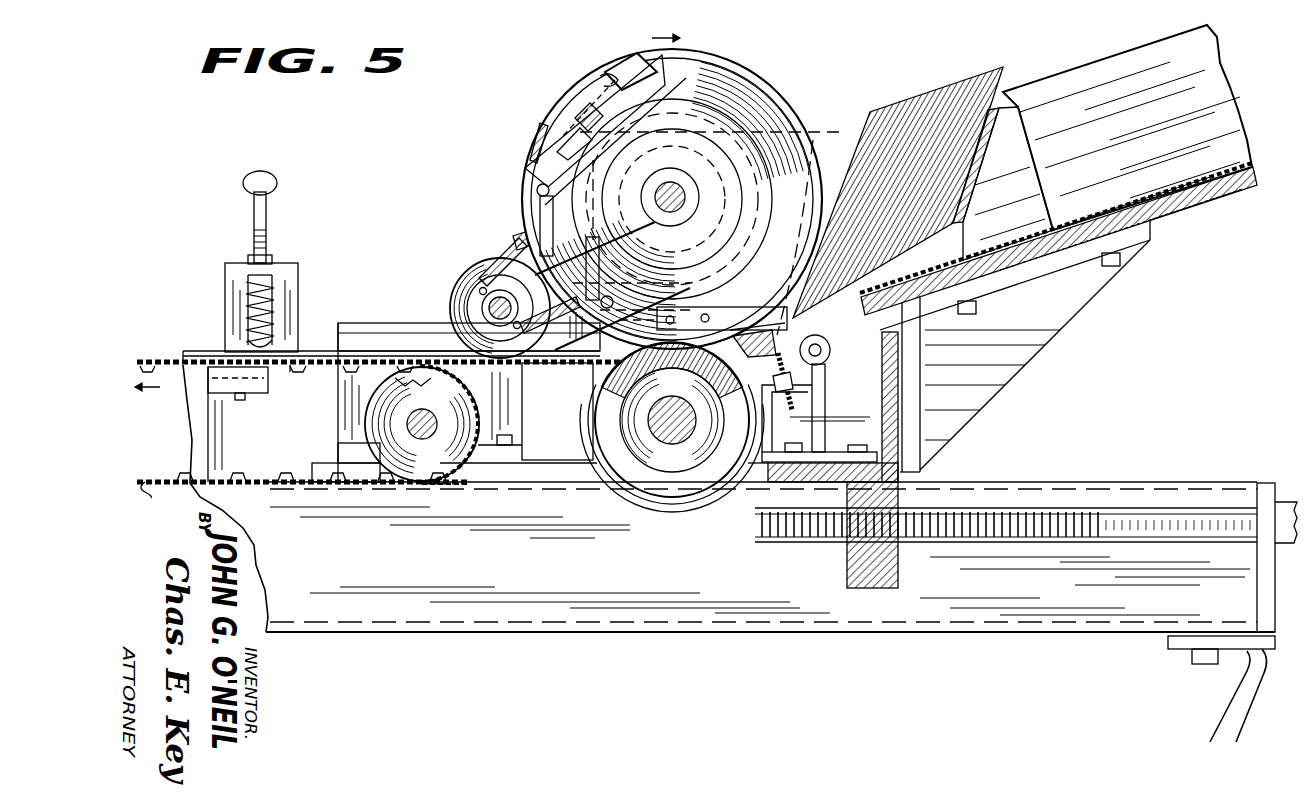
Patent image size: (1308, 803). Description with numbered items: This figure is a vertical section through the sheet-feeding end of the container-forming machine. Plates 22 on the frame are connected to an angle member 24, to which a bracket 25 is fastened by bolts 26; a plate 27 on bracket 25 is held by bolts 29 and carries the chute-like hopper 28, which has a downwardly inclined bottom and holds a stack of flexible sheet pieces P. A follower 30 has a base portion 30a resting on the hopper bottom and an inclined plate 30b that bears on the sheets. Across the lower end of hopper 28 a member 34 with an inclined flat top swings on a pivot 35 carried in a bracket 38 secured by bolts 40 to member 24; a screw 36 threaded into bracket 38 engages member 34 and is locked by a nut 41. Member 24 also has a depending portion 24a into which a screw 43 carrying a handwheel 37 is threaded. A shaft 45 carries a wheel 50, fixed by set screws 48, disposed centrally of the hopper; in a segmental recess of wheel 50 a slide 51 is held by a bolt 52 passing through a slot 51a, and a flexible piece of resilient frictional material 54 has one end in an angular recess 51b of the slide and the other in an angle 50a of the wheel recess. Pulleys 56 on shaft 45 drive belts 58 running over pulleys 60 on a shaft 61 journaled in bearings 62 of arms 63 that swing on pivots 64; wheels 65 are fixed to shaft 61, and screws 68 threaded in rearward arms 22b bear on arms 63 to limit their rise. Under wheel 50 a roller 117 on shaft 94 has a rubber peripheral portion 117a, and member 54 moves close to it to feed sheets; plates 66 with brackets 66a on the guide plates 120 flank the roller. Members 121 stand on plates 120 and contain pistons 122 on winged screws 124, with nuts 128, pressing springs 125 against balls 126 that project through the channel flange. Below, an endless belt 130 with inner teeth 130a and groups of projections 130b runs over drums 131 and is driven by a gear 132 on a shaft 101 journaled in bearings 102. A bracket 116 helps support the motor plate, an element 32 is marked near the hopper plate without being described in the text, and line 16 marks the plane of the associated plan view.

The wheel 50 is at (770, 96).
The sprockets or pulleys 56 is at (672, 146).
The set screws 48 is at (660, 190).
The shaft 45 is at (684, 190).
The arms 63 is at (652, 208).
The pivots 64 is at (638, 250).
The plates 22 is at (820, 132).
The arms 22b is at (528, 247).
The slide 51 is at (638, 60).
The slot 51a is at (598, 94).
The angular recess 51b is at (616, 79).
The flexible piece of resilient frictional material 54 is at (565, 132).
The bolt 52 is at (578, 112).
The angle 50a is at (530, 165).
The screws 68 is at (537, 190).
The belts 58 is at (516, 244).
The sprockets or pulleys 60 is at (488, 280).
The wheels 65 is at (466, 296).
The shaft 61 is at (484, 304).
The bearings 62 is at (478, 313).
The plates 66 is at (640, 395).
The brackets 66a is at (712, 306).
The shaft 94 is at (676, 444).
The roller 117 is at (647, 477).
The peripheral portion 117a is at (713, 487).
The member 34 is at (830, 349).
The pivot 35 is at (843, 396).
The bracket 38 is at (825, 437).
The screw 36 is at (774, 378).
The nut 41 is at (790, 382).
The bolts 40 is at (790, 478).
The angle member 24 is at (900, 386).
The depending portion 24a is at (892, 560).
The screw 43 is at (770, 542).
The line 16— 16 is at (700, 380).
The plate 27 is at (1192, 202).
The feed belt 32 is at (1250, 162).
The chute-like hopper 28 is at (1218, 126).
The pieces of flexible sheet material P is at (873, 112).
The follower 30 is at (1032, 178).
The base portion 30a is at (1040, 223).
The plate 30b is at (988, 176).
The bracket 25 is at (1010, 352).
The bolts 26 is at (935, 432).
The bolts 29 is at (976, 312).
The handwheel 37 is at (1284, 512).
The bracket 116 is at (1226, 736).
The plates 120 is at (300, 348).
The endless belt 130 is at (275, 372).
The teeth 130a is at (300, 373).
The projections 130b is at (333, 350).
The bearings 102 is at (357, 452).
The shaft 101 is at (420, 434).
The gear 132 is at (468, 366).
The drums 131 is at (436, 485).
The members 121 is at (300, 275).
The screws 124 is at (266, 228).
The nuts 128 is at (246, 258).
The pistons 122 is at (243, 292).
The coiled compression springs 125 is at (240, 299).
The balls 126 is at (240, 342).